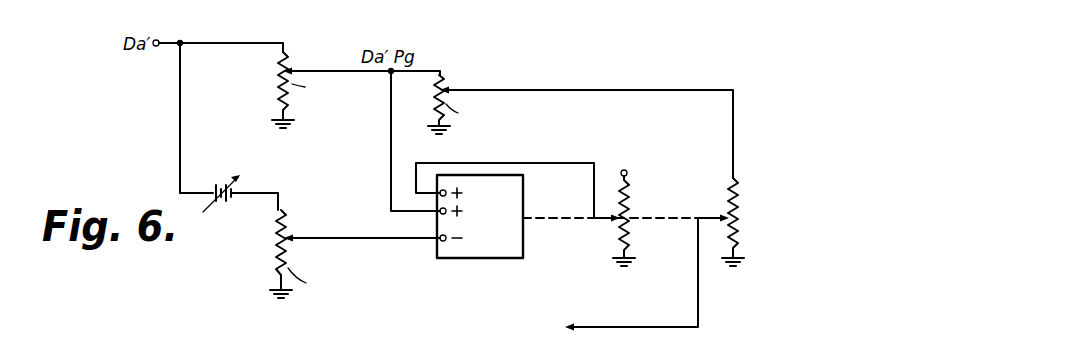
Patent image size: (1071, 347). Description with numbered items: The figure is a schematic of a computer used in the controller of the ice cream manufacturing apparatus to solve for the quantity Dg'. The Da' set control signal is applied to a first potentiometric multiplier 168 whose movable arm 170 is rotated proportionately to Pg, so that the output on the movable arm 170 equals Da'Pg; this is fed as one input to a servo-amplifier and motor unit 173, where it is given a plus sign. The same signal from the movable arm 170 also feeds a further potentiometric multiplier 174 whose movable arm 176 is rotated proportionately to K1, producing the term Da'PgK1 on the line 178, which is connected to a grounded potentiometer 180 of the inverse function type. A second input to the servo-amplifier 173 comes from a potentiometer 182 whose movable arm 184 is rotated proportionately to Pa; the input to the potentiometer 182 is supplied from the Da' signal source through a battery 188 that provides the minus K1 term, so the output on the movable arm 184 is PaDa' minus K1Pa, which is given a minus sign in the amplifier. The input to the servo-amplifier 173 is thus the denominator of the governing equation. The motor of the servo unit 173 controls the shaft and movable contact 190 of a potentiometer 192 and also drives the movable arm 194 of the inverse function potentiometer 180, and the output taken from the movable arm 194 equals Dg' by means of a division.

The first potentiometric multiplier 168 is at (280, 91).
The movable arm 170 is at (311, 69).
The servo-amplifier and motor unit 173 is at (479, 259).
The further potentiometric multiplier 174 is at (448, 121).
The movable arm 176 is at (452, 86).
The line 178 is at (613, 89).
The grounded potentiometer 180 is at (742, 200).
The potentiometer 182 is at (278, 233).
The movable arm 184 is at (316, 240).
The battery 188 is at (216, 188).
The movable contact 190 is at (603, 221).
The potentiometer 192 is at (629, 208).
The movable arm 194 is at (706, 215).